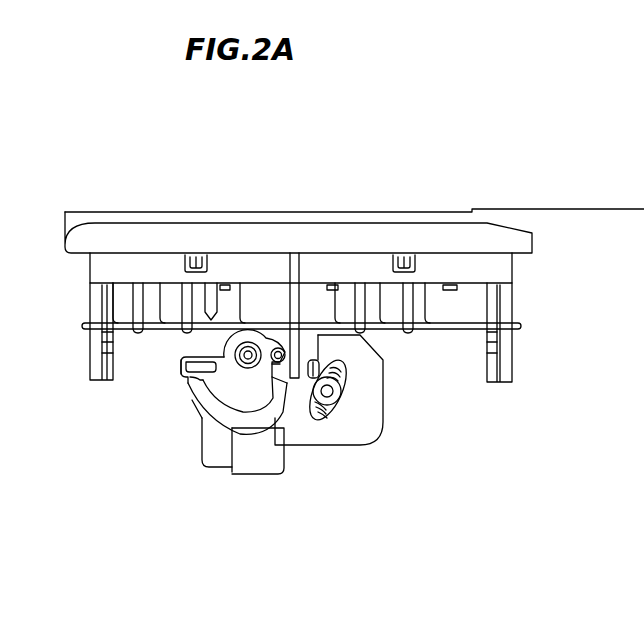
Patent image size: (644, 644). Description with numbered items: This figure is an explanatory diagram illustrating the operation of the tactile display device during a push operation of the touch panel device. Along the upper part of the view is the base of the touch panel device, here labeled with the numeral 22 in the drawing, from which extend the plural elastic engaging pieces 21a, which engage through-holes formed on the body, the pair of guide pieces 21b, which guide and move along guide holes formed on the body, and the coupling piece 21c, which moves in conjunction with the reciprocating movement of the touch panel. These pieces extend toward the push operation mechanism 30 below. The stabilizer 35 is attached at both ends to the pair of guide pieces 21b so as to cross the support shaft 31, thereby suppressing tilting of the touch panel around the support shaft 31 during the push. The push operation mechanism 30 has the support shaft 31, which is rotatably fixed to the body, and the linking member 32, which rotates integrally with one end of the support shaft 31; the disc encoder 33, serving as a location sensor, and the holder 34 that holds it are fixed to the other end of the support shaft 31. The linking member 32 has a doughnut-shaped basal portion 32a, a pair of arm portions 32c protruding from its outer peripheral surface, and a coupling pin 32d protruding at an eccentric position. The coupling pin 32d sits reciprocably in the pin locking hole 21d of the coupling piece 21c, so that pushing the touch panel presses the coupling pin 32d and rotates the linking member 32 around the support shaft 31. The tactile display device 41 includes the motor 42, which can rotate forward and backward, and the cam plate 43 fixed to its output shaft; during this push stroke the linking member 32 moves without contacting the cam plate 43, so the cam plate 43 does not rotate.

The plate 22 is at (282, 218).
The elastic engaging piece 21a is at (187, 310).
The guide piece 21b is at (93, 308).
The coupling piece 21c is at (305, 318).
The pin locking hole 21d is at (272, 348).
The stabilizer 35 is at (82, 330).
The push operation mechanism 30 is at (218, 594).
The support shaft 31 is at (226, 388).
The linking member 32 is at (253, 390).
The basal portion 32a is at (232, 430).
The arm portion 32c is at (180, 362).
The coupling pin 32d is at (272, 374).
The disc encoder 33 is at (213, 447).
The holder 34 is at (243, 467).
The drive unit 41 is at (522, 437).
The motor 42 is at (370, 405).
The cam plate 43 is at (330, 416).